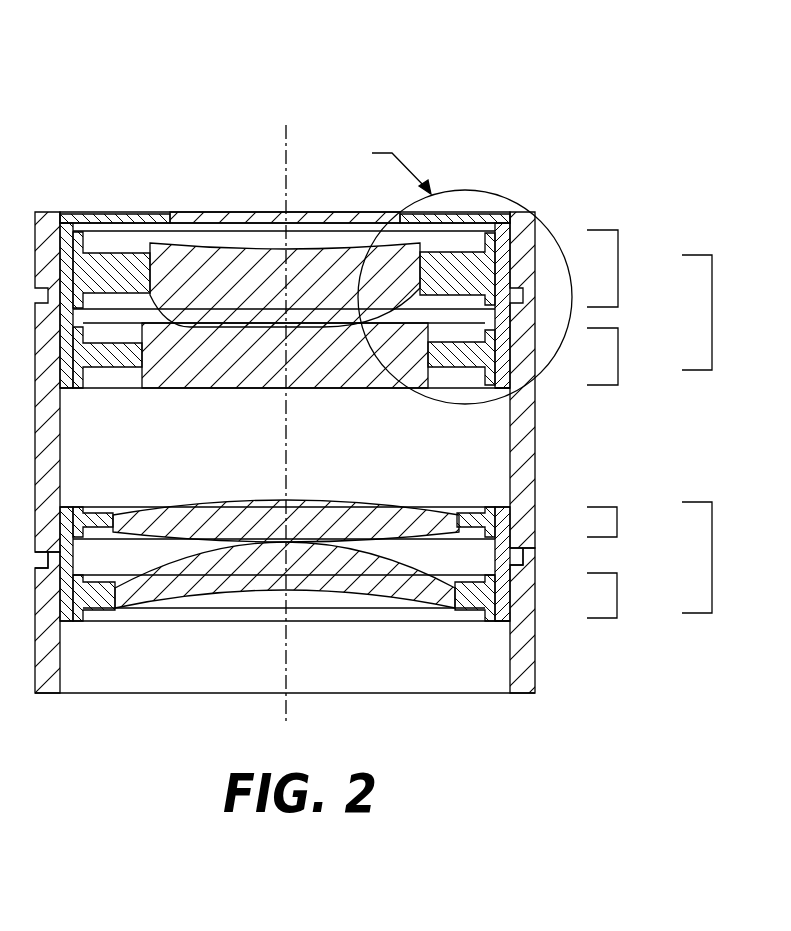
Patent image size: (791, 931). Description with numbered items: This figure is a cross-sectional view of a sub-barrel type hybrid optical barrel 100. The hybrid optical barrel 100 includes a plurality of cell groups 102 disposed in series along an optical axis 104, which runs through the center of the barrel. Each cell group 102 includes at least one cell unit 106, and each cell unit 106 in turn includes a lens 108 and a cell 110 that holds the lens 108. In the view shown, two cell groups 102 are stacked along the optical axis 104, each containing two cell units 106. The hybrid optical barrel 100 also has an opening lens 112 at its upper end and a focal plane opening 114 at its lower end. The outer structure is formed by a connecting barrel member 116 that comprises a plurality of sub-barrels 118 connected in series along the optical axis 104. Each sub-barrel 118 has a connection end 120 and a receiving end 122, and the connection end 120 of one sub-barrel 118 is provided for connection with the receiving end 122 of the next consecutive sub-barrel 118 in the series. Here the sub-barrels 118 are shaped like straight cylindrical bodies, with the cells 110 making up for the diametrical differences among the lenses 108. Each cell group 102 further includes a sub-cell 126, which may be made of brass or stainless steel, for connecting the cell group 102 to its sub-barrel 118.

The hybrid optical barrel 100 is at (94, 122).
The cell group 102 is at (724, 434).
The optical axis 104 is at (287, 411).
The cell unit 106 is at (366, 422).
The lens 108 is at (170, 252).
The cell 110 is at (103, 262).
The opening lens 112 is at (248, 211).
The focal plane opening 114 is at (142, 695).
The connecting barrel member 116 is at (533, 433).
The sub-barrel 118 is at (525, 677).
The connection end 120 is at (533, 553).
The receiving end 122 is at (520, 538).
The sub-cell 126 is at (500, 386).